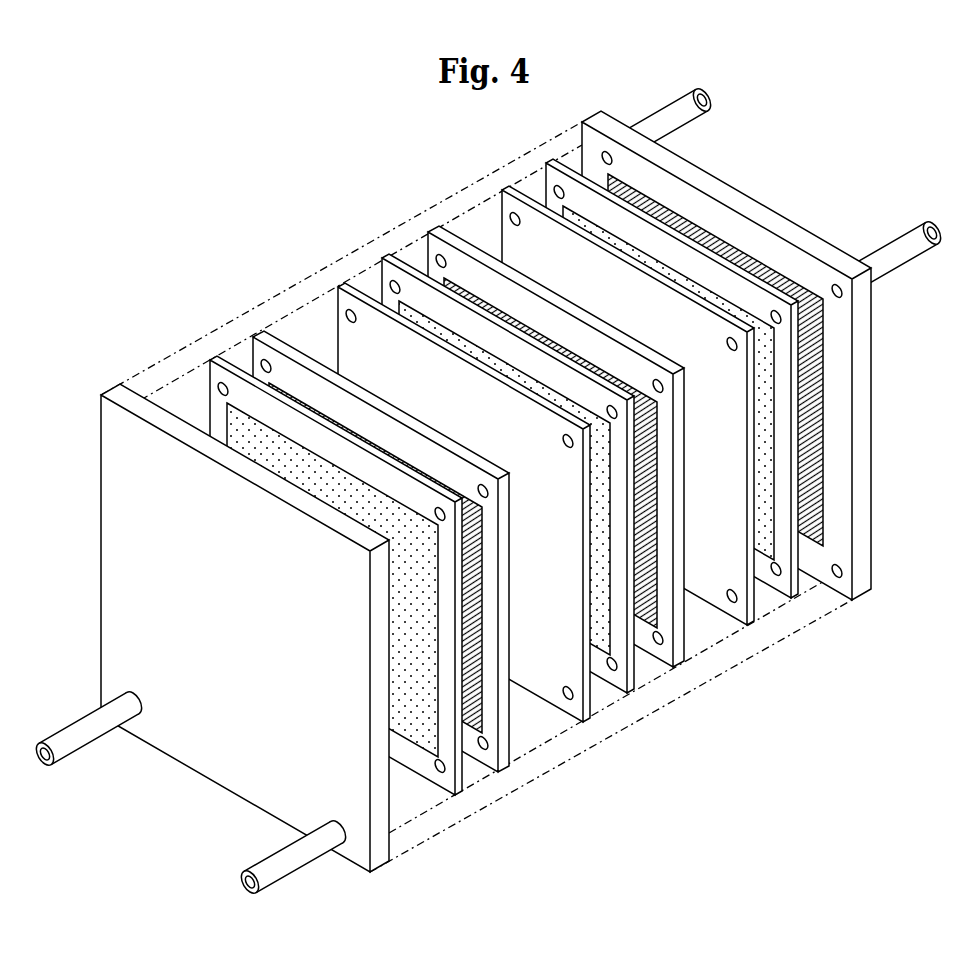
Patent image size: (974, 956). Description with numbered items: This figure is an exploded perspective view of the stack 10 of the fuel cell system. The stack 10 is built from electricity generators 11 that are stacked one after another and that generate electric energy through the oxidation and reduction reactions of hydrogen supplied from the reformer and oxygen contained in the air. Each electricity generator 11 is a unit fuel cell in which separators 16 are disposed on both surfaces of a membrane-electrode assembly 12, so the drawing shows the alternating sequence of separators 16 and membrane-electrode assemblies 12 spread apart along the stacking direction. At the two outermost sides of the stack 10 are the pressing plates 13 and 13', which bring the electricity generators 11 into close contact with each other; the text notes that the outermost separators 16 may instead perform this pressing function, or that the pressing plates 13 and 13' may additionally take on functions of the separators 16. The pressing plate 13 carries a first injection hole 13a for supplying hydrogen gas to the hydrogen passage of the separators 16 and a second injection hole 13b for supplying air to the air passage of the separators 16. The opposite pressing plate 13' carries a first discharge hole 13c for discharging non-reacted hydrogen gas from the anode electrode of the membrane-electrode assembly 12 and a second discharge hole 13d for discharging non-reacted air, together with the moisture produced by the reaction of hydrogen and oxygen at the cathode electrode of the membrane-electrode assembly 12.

The stack 10 is at (401, 167).
The electricity generator 11 is at (547, 514).
The membrane-electrode assembly 12 is at (643, 689).
The pressing plate 13 is at (750, 355).
The pressing plate 13' is at (276, 644).
The first injection hole 13a is at (697, 95).
The second injection hole 13b is at (922, 223).
The first discharge hole 13c is at (257, 870).
The second discharge hole 13d is at (62, 733).
The separator 16 is at (544, 505).